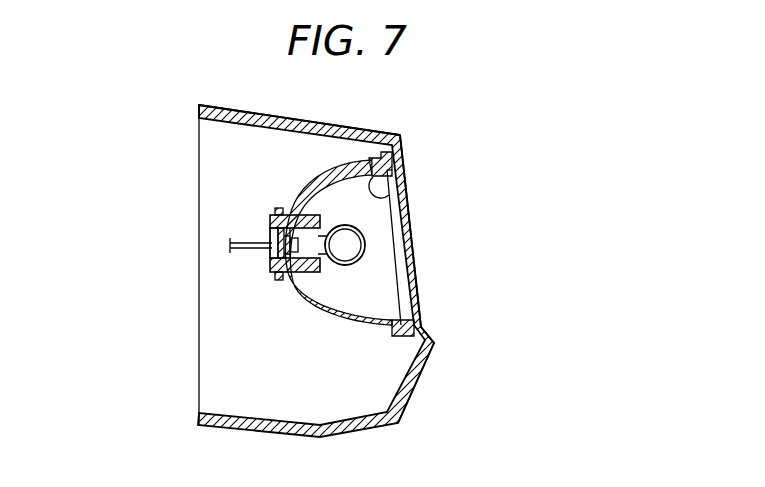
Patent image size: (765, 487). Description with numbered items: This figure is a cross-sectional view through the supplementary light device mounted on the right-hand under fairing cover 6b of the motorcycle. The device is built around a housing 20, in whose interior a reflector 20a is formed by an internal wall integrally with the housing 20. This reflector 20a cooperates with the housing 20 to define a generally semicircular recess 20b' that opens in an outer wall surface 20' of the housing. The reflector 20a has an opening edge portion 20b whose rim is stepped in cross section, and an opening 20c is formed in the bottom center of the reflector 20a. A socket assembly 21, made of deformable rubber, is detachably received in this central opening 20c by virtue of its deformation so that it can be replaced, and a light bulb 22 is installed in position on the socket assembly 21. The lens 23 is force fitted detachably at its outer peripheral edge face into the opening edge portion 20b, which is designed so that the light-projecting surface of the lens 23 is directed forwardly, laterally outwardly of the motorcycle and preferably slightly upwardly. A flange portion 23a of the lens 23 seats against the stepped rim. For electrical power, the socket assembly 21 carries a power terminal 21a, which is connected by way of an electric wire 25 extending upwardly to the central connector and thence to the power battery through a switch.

The right-hand under fairing cover 6b is at (341, 123).
The housing 20 is at (305, 285).
The reflector 20a is at (421, 307).
The outer wall surface 20' is at (465, 375).
The opening edge portion 20b is at (457, 247).
The semicircular recess 20b' is at (352, 280).
The opening 20c is at (268, 241).
The socket assembly 21 is at (271, 273).
The power terminal 21a is at (265, 273).
The light bulb 22 is at (350, 244).
The lens 23 is at (411, 260).
The reflector flange 23a is at (399, 152).
The electric wire 25 is at (253, 250).